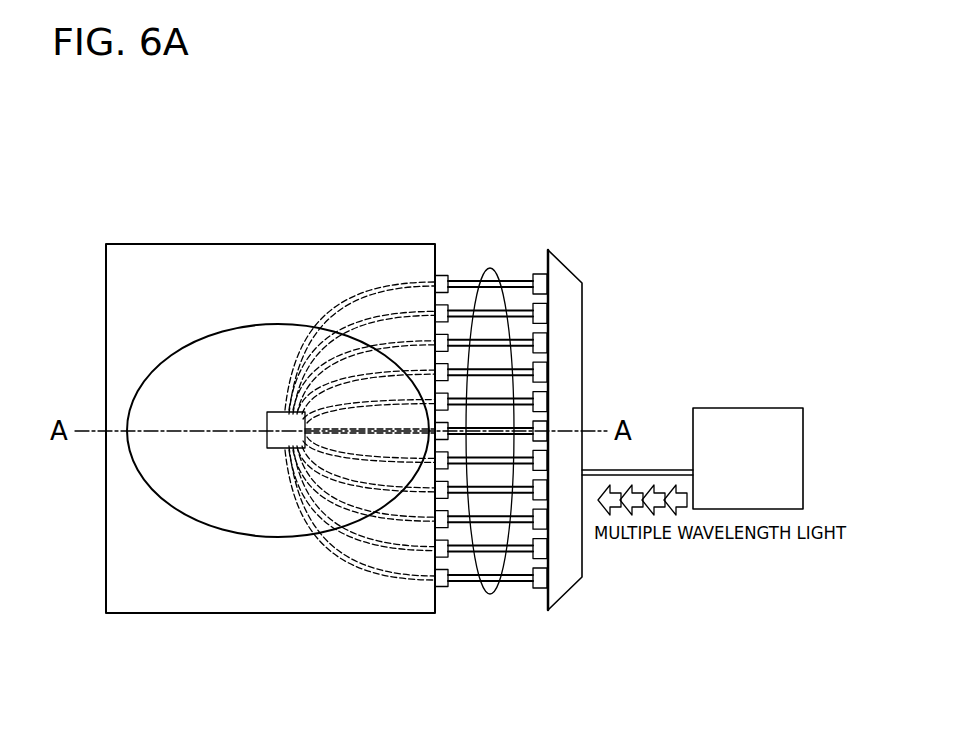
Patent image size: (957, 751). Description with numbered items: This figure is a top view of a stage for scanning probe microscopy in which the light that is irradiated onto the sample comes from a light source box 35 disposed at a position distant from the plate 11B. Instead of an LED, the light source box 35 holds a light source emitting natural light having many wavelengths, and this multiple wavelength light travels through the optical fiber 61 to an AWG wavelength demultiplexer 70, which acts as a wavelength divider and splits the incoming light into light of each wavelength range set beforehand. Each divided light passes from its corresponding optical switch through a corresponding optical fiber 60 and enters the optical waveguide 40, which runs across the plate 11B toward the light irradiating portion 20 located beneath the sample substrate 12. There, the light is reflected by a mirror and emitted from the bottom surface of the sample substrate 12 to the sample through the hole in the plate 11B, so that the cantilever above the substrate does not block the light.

The plate 11B is at (106, 527).
The sample substrate 12 is at (222, 368).
The light irradiating portion 20 is at (283, 440).
The optical waveguide 40 is at (404, 578).
The optical fiber 60 is at (478, 272).
The AWG wavelength demultiplexer 70 is at (534, 256).
The optical fiber 61 is at (664, 460).
The light source box 35 is at (720, 408).